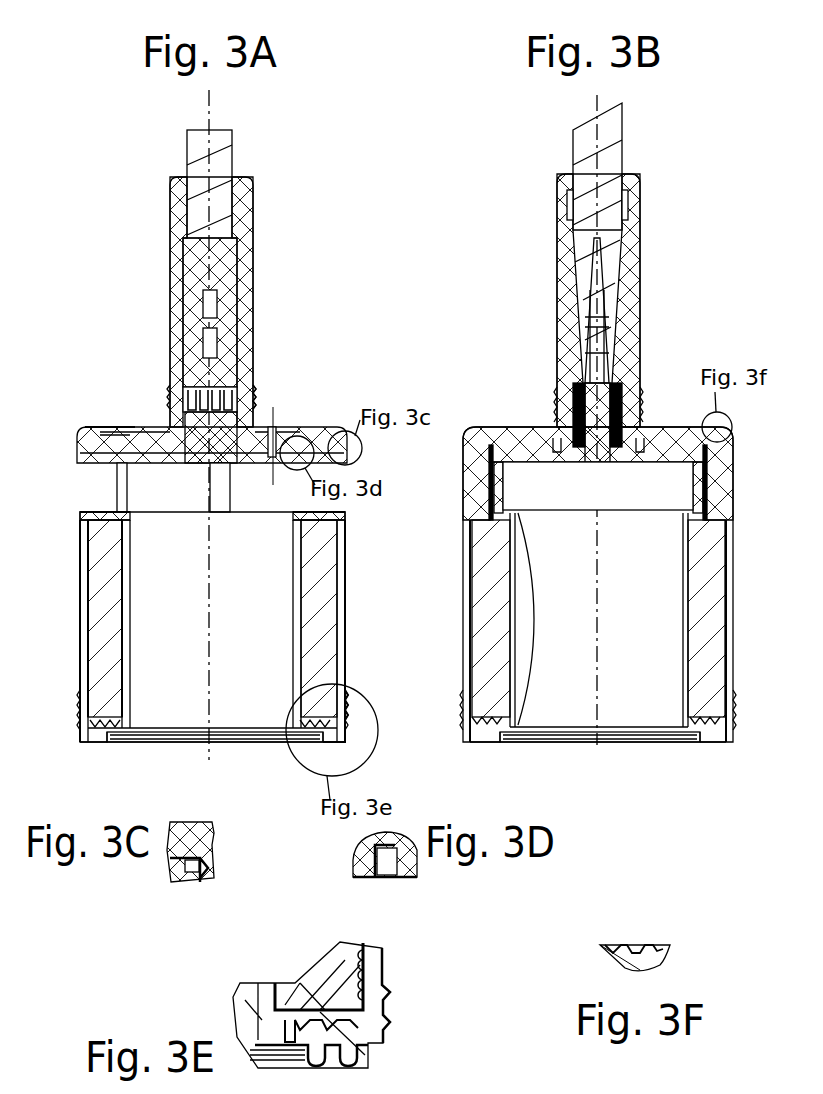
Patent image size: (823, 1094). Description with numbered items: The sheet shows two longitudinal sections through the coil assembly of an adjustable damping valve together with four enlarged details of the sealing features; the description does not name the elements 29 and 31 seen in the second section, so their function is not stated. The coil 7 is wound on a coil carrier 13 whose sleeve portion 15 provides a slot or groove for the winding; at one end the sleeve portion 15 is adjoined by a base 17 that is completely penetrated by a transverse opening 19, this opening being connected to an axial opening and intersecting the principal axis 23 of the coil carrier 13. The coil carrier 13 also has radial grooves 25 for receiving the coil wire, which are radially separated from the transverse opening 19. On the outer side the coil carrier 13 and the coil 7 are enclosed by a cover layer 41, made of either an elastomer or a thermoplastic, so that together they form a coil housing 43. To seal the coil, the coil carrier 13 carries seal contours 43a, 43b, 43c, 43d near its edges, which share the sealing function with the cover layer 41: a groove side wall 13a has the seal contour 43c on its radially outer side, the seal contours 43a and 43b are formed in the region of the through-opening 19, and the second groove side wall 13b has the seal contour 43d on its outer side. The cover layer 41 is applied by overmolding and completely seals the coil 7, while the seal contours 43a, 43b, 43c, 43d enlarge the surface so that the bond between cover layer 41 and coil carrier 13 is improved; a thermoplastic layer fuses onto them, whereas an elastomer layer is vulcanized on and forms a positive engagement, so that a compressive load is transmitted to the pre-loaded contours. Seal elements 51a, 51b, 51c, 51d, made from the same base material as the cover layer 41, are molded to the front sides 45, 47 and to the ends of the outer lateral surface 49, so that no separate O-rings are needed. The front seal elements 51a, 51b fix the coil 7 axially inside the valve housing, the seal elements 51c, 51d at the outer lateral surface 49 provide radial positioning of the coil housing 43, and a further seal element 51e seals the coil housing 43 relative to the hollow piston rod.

In FIG. 3A, the coil 7 is at (105, 598).
In FIG. 3A, the coil carrier 13 is at (128, 655).
In FIG. 3B, the coil carrier 13 is at (680, 670).
In FIG. 3A, the groove side wall 13a is at (100, 515).
In FIG. 3A, the second groove side wall 13b is at (95, 718).
In FIG. 3E, the second groove side wall 13b is at (322, 1010).
In FIG. 3B, the sleeve portion 15 is at (543, 615).
In FIG. 3B, the base 17 is at (668, 455).
In FIG. 3B, the transverse opening 19 is at (517, 500).
In FIG. 3B, the principal axis 23 is at (600, 597).
In FIG. 3B, the radial grooves 25 is at (492, 470).
In FIG. 3B, the nozzle housing 29 is at (513, 427).
In FIG. 3B, the cap 31 is at (470, 428).
In FIG. 3A, the cover layer 41 is at (82, 650).
In FIG. 3B, the cover layer 41 is at (732, 647).
In FIG. 3F, the cover layer 41 is at (665, 965).
In FIG. 3A, the coil housing 43 is at (227, 631).
In FIG. 3B, the coil housing 43 is at (583, 658).
In FIG. 3C, the seal contour 43a is at (200, 865).
In FIG. 3D, the seal contour 43b is at (365, 846).
In FIG. 3A, the seal contour 43c is at (84, 516).
In FIG. 3E, the seal contour 43d is at (287, 1024).
In FIG. 3A, the front side 45 is at (143, 425).
In FIG. 3A, the front side 47 is at (258, 735).
In FIG. 3A, the outer lateral surface 49 is at (88, 560).
In FIG. 3A, the seal element 51a is at (91, 424).
In FIG. 3F, the seal element 51a is at (617, 938).
In FIG. 3A, the seal element 51b is at (340, 742).
In FIG. 3A, the seal element 51c is at (77, 445).
In FIG. 3A, the seal element 51d is at (343, 710).
In FIG. 3E, the seal element 51d is at (385, 995).
In FIG. 3A, the seal element 51e is at (250, 392).